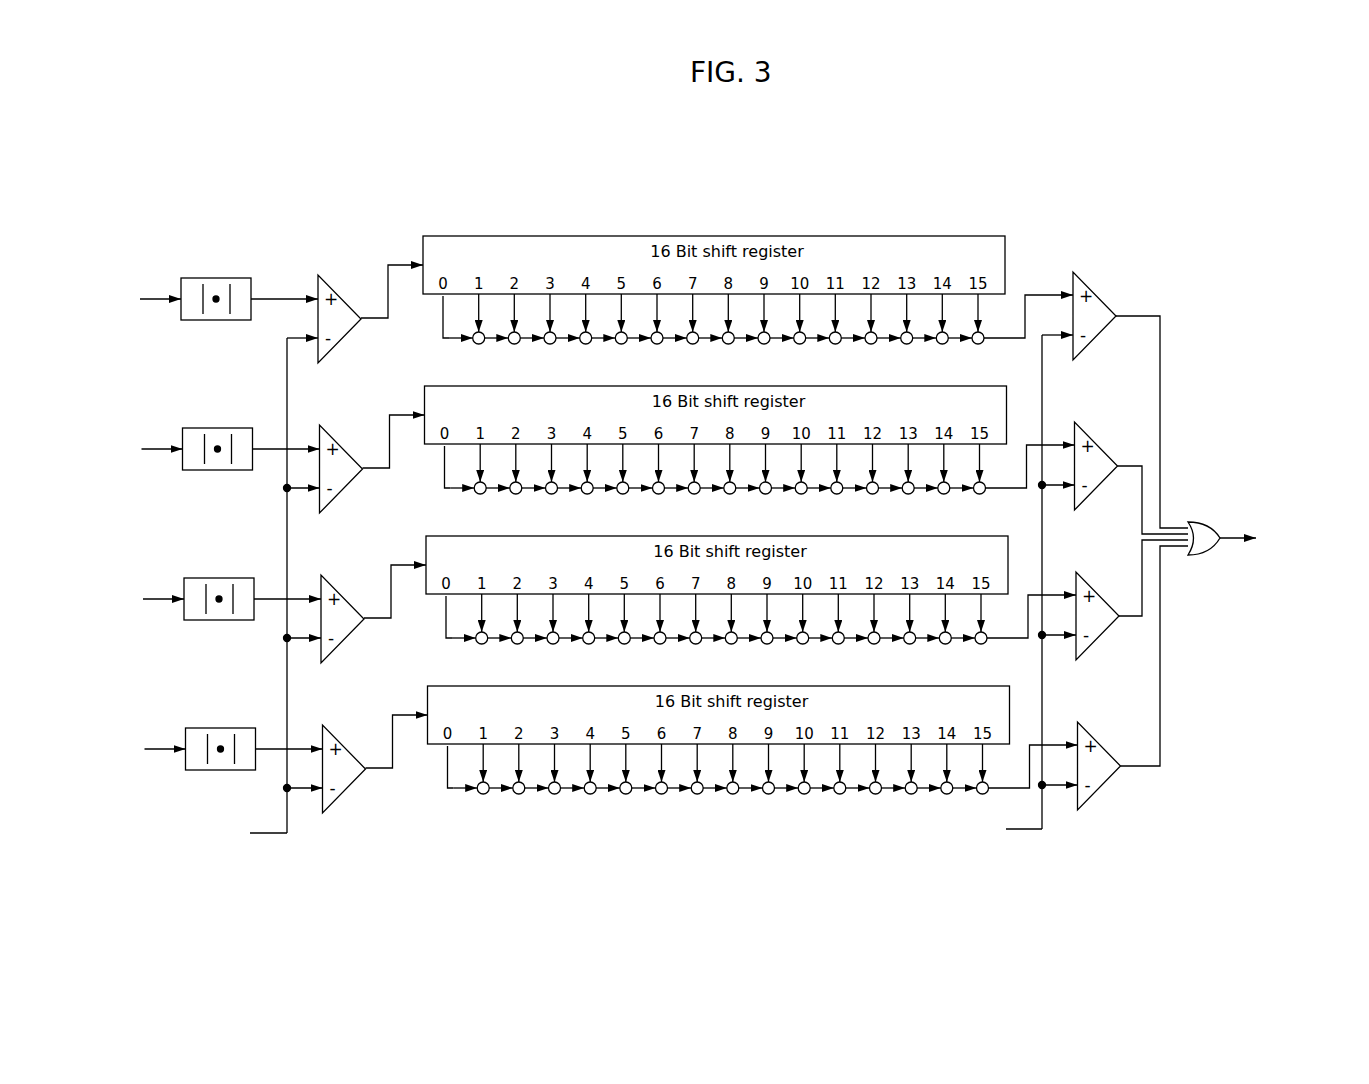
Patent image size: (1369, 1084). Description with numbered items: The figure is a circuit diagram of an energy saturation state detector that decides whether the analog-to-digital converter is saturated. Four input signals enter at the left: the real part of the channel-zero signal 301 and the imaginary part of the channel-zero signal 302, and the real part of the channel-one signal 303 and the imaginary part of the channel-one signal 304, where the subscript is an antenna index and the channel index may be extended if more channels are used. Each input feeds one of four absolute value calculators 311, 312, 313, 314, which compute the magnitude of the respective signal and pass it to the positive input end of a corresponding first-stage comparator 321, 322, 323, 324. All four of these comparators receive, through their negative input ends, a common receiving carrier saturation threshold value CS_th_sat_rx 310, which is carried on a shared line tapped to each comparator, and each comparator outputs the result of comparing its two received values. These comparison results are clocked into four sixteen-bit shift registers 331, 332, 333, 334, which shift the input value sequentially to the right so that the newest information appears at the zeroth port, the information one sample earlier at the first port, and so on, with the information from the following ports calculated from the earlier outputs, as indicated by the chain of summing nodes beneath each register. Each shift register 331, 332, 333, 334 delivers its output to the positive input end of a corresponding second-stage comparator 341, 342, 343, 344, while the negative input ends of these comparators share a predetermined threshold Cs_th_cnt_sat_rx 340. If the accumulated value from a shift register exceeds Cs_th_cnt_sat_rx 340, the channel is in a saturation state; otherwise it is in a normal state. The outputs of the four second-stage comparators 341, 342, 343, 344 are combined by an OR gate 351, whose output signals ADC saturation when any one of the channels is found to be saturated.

The input signal Re{r_k^0} 301 is at (112, 326).
The input signal Im{r_k^0} 302 is at (135, 469).
The input signal Re{r_k^1} 303 is at (136, 619).
The input signal Im{r_k^1} 304 is at (138, 769).
The receiving carrier saturation threshold value CS_th_sat_rx 310 is at (228, 848).
The absolute value calculator 311 is at (226, 278).
The absolute value calculator 312 is at (251, 438).
The absolute value calculator 313 is at (252, 588).
The absolute value calculator 314 is at (254, 738).
The comparator 321 is at (333, 290).
The comparator 322 is at (356, 462).
The comparator 323 is at (356, 612).
The comparator 324 is at (357, 762).
The shift register 331 is at (940, 236).
The shift register 332 is at (750, 427).
The shift register 333 is at (751, 577).
The shift register 334 is at (753, 727).
The saturation count threshold value Cs_th_cnt_sat_rx 340 is at (980, 843).
The comparator 341 is at (1087, 287).
The comparator 342 is at (1115, 472).
The comparator 343 is at (1115, 600).
The comparator 344 is at (1115, 678).
The OR gate 351 is at (1205, 521).